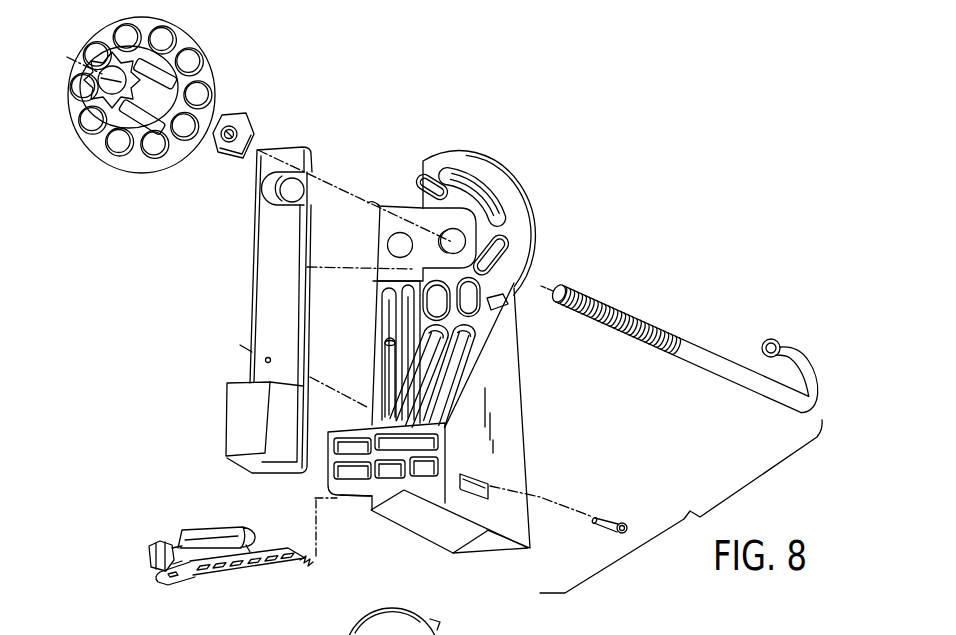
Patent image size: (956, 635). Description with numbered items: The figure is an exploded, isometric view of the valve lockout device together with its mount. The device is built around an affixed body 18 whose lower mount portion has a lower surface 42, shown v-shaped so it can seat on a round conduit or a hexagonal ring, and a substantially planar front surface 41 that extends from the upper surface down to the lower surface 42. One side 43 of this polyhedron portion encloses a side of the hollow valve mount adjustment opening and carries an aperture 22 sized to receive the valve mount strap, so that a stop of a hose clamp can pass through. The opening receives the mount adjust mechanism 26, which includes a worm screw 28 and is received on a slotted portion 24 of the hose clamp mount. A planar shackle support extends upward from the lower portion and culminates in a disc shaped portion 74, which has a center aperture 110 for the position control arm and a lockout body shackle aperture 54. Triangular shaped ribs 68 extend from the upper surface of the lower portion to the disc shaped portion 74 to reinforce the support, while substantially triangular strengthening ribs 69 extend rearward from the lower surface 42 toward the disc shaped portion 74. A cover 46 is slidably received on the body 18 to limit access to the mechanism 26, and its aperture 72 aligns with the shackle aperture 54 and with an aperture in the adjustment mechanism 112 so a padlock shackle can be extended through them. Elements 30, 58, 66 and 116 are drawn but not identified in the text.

The affixed body 18 is at (556, 235).
The aperture 22 is at (479, 483).
The slotted portion 24 is at (270, 563).
The mount adjust mechanism 26 is at (209, 528).
The worm screw 28 is at (160, 544).
The bent tab 30 is at (180, 584).
The front surface 41 is at (383, 490).
The lower surface 42 is at (430, 525).
The side 43 is at (478, 463).
The cover 46 is at (284, 146).
The lockout body shackle aperture 54 is at (391, 241).
The clip box 58 is at (260, 431).
The arm 66 is at (257, 245).
The triangular shaped ribs 68 is at (473, 357).
The strengthening ribs 69 is at (519, 398).
The aperture 72 is at (305, 192).
The disc shaped portion 74 is at (471, 156).
The center aperture 110 is at (465, 238).
The adjustment mechanism 112 is at (200, 47).
The hex nut 116 is at (237, 116).